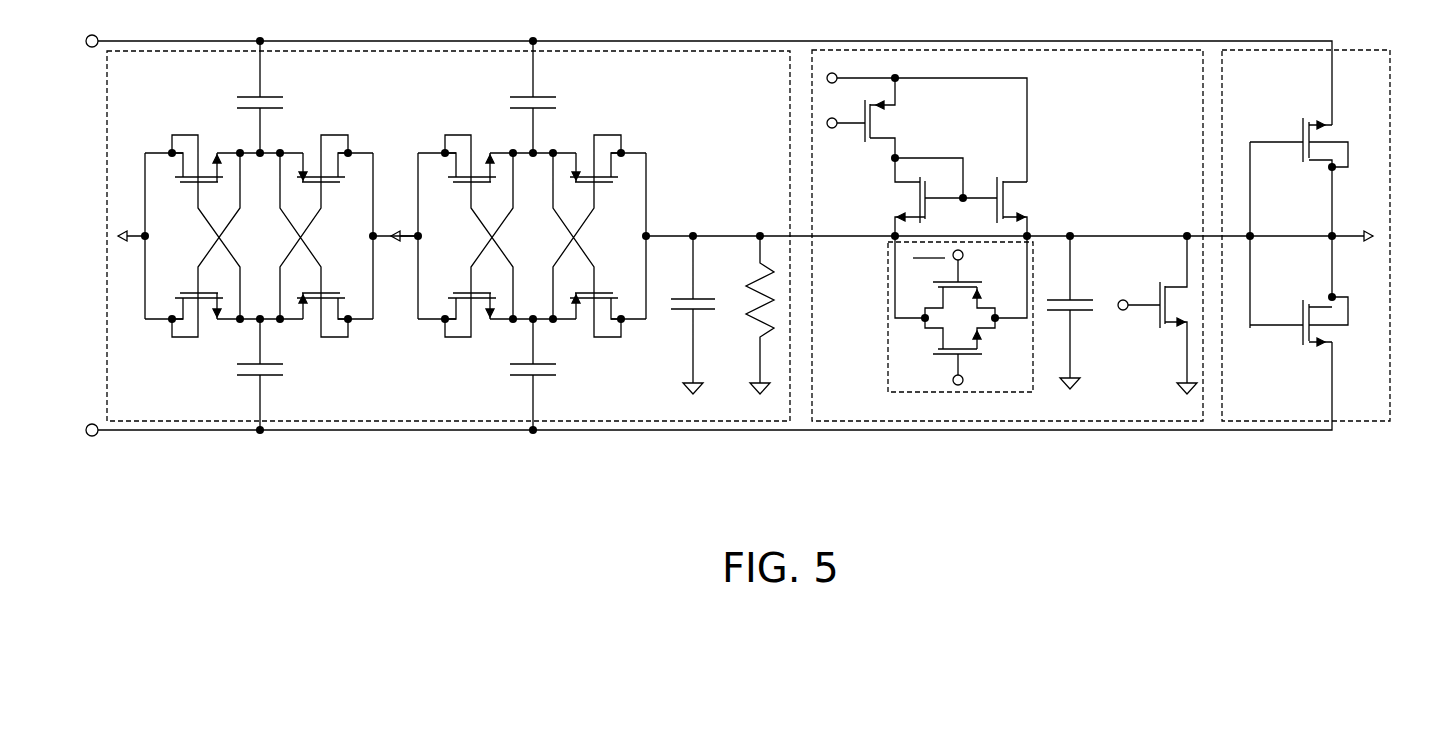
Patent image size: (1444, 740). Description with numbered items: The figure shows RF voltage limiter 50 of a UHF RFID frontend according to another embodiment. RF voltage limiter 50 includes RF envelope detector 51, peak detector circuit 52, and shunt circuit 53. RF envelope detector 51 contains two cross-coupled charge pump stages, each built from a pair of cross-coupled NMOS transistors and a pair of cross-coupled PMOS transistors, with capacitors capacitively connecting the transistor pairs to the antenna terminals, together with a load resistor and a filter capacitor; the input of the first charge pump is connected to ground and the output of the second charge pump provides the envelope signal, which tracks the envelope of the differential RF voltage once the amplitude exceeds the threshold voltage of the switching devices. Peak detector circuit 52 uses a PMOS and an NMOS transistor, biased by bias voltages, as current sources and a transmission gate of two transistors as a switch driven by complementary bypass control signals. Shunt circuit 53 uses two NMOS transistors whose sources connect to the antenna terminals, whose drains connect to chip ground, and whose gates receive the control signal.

The RF voltage limiter 50 is at (725, 270).
The RF envelope detector 51 is at (107, 222).
The peak detector circuit 52 is at (1136, 420).
The shunt circuit 53 is at (1368, 50).